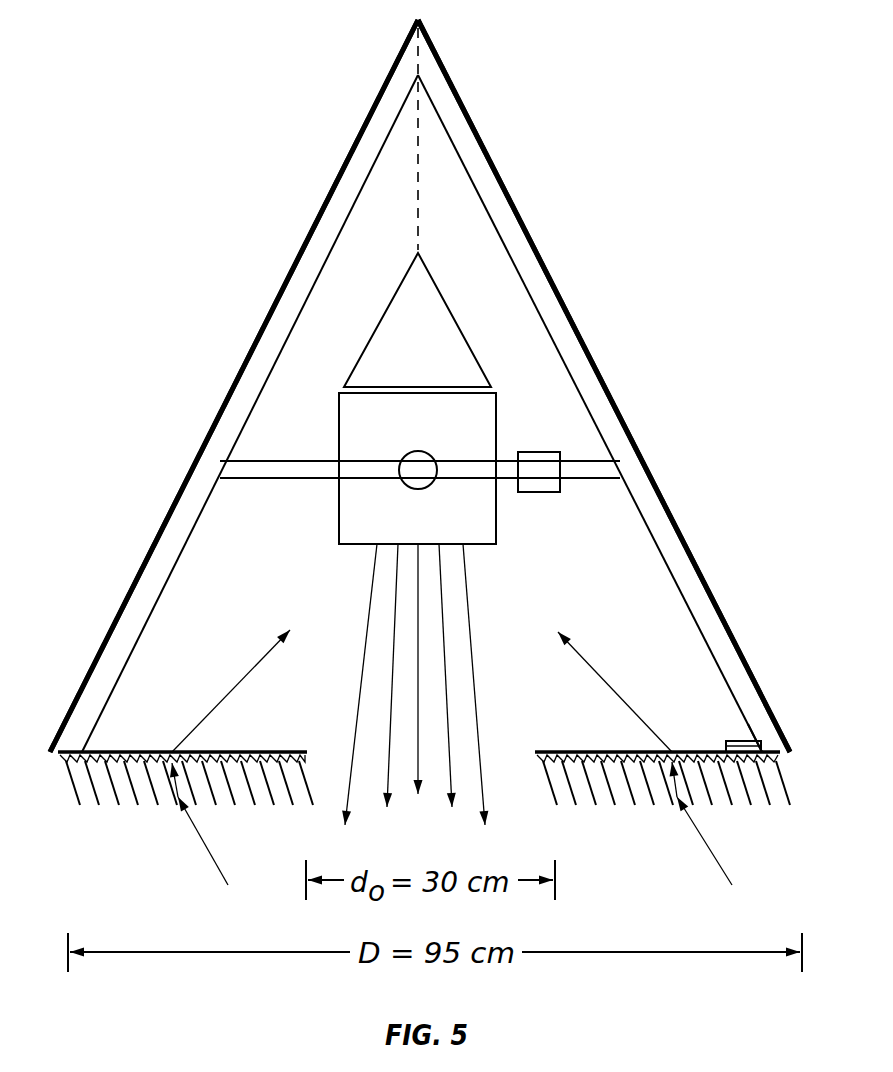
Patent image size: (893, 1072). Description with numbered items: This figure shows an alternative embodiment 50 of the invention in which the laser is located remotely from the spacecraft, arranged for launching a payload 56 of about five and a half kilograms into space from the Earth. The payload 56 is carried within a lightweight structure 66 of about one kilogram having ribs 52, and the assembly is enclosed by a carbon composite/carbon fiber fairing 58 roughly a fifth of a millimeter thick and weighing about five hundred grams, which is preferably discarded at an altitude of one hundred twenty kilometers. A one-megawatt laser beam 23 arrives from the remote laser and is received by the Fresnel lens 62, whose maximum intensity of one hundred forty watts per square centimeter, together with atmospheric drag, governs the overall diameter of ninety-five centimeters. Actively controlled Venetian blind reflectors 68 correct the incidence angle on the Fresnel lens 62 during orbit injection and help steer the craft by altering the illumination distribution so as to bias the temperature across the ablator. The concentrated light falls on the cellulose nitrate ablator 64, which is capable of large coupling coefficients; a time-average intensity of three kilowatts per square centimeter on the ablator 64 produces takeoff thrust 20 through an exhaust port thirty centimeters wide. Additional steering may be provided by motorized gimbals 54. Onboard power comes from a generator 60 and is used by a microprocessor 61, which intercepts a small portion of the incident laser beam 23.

The takeoff thrust 20 is at (418, 808).
The laser beam 23 is at (209, 848).
The alternative embodiment 50 is at (218, 56).
The ribs 52 is at (512, 258).
The motorized gimbals 54 is at (432, 452).
The payload 56 is at (395, 304).
The carbon composite/carbon fiber fairing 58 is at (657, 485).
The generator 60 is at (729, 740).
The microprocessor 61 is at (741, 740).
The Fresnel lens 62 is at (233, 690).
The cellulose nitrate ablator 64 is at (338, 508).
The structure 66 is at (179, 491).
The Venetian blind reflectors 68 is at (64, 762).